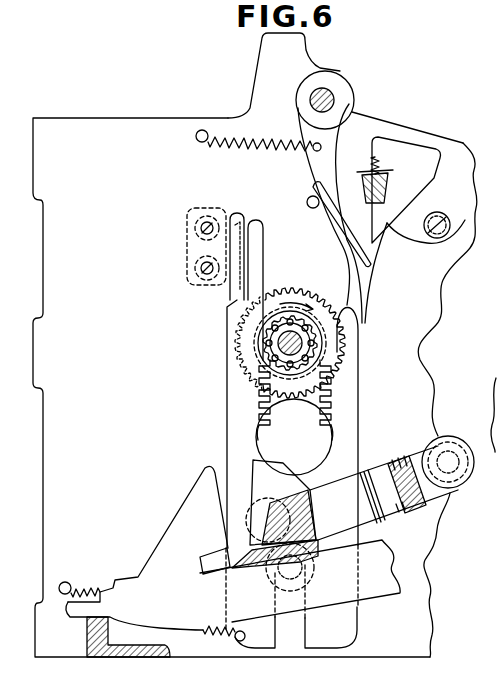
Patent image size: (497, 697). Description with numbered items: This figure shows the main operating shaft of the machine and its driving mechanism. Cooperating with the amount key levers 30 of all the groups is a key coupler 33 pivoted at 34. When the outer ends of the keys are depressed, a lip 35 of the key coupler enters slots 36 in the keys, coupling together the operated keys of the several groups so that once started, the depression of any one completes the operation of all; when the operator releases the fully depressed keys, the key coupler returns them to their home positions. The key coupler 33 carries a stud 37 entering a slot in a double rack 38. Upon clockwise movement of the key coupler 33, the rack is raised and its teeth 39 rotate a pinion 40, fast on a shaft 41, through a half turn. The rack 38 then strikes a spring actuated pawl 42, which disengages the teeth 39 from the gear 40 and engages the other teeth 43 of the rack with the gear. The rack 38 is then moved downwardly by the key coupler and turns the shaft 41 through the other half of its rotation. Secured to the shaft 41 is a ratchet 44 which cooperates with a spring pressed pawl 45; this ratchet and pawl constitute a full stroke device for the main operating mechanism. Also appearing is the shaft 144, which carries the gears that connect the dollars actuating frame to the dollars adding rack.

The shaft 144 is at (309, 96).
The spring actuated pawl 42 is at (323, 168).
The spring pressed pawl 45 is at (393, 237).
The ratchet 44 is at (284, 290).
The shaft 41 is at (280, 345).
The pinion 40 is at (296, 350).
The double rack 38 is at (238, 408).
The teeth 43 is at (318, 418).
The teeth 39 is at (264, 424).
The pivot 34 is at (452, 448).
The key coupler 33 is at (396, 455).
The stud 37 is at (290, 501).
The slots 36 is at (212, 557).
The lip 35 is at (260, 570).
The amount key levers 30 is at (374, 580).